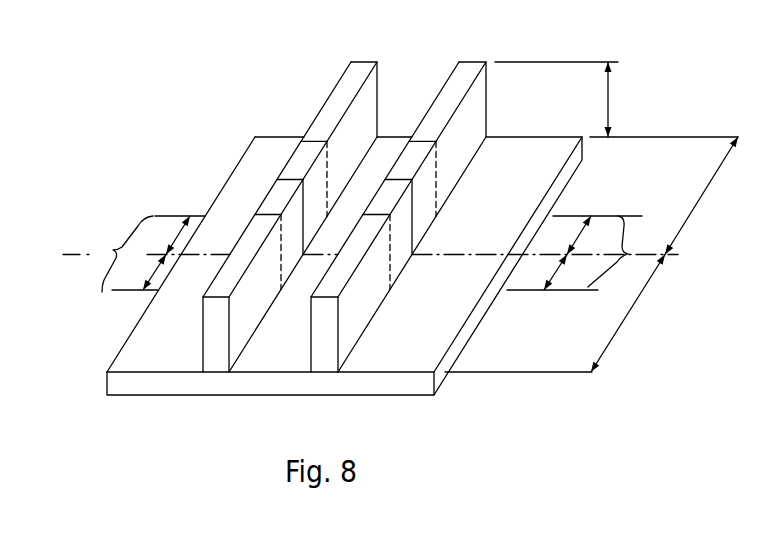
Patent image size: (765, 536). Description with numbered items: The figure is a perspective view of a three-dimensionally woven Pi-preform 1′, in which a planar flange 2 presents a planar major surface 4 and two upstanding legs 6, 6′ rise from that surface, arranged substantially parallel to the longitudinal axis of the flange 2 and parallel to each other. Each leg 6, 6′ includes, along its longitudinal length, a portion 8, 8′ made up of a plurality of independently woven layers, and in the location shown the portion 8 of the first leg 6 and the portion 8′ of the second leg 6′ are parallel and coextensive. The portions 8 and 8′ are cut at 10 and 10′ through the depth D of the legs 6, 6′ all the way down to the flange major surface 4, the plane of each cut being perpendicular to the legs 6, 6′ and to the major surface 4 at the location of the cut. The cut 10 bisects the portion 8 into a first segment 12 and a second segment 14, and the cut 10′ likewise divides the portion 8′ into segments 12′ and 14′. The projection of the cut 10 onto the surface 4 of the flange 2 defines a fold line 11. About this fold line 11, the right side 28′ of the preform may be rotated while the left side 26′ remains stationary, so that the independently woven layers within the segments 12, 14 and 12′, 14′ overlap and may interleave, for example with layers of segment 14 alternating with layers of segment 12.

The 3D woven Pi-preform 1′ is at (596, 42).
The planar flange 2 is at (387, 395).
The planar major surface 4 is at (142, 347).
The first leg 6 is at (478, 60).
The second leg 6′ is at (299, 187).
The portion of first leg 8 is at (613, 251).
The portion of second leg 8′ is at (122, 254).
The cut 10 is at (400, 179).
The cut 10′ is at (261, 201).
The fold line 11 is at (360, 255).
The first segment 12 is at (552, 272).
The first segment of second leg 12′ is at (140, 272).
The second segment 14 is at (597, 235).
The second segment of second leg 14′ is at (172, 235).
The left side of preform 26′ is at (556, 313).
The right side of preform 28′ is at (701, 195).
The depth of leg D is at (616, 99).